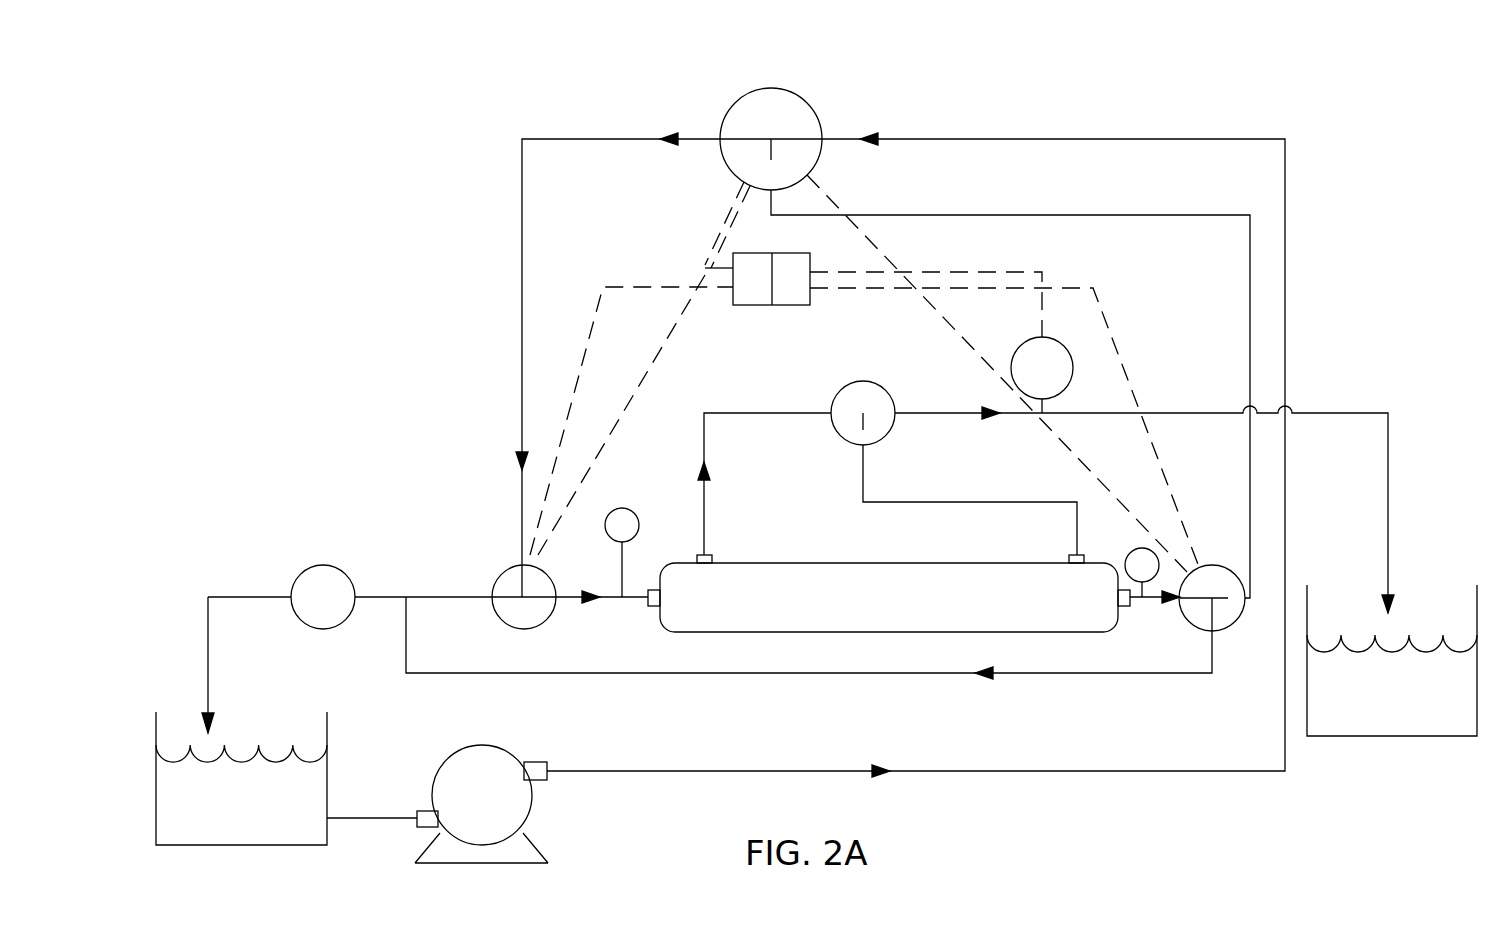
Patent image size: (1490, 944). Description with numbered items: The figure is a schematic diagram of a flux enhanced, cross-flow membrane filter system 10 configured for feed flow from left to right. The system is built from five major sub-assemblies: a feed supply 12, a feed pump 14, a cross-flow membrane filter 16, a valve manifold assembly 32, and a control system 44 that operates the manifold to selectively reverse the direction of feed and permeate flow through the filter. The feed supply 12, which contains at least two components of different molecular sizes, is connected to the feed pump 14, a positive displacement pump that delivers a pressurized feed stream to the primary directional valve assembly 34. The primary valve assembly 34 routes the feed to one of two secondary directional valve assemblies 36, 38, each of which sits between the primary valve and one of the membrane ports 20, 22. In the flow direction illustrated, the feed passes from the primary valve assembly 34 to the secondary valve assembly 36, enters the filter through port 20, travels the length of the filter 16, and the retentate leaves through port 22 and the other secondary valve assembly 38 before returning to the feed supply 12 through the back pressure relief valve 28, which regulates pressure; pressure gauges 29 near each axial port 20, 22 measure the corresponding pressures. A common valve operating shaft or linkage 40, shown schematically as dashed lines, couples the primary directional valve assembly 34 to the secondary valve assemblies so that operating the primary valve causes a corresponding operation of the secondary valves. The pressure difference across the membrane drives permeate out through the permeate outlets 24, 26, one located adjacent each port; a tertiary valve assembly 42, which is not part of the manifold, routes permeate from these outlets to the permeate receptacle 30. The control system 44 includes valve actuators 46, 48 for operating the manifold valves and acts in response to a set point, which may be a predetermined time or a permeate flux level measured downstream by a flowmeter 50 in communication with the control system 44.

The filtration system 10 is at (425, 310).
The feed supply 12 is at (328, 783).
The feed pump 14 is at (481, 745).
The cross-flow membrane filter 16 is at (822, 514).
The filter port 20 is at (647, 608).
The filter port 22 is at (1123, 608).
The permeate outlet 24 is at (698, 555).
The permeate outlet 26 is at (1085, 552).
The pressure relief valve 28 is at (325, 565).
The pressure gauges 29 is at (622, 508).
The permeate receptacle 30 is at (1310, 736).
The valve manifold assembly 32 is at (950, 118).
The primary directional valve assembly 34 is at (722, 112).
The secondary directional valve assembly 36 is at (500, 572).
The secondary directional valve assembly 38 is at (1197, 567).
The common valve operating shaft or linkage 40 is at (700, 277).
The tertiary valve assembly 42 is at (845, 385).
The control system 44 is at (775, 260).
The valve actuator 46 is at (751, 287).
The valve actuator 48 is at (790, 287).
The flowmeter 50 is at (1068, 350).